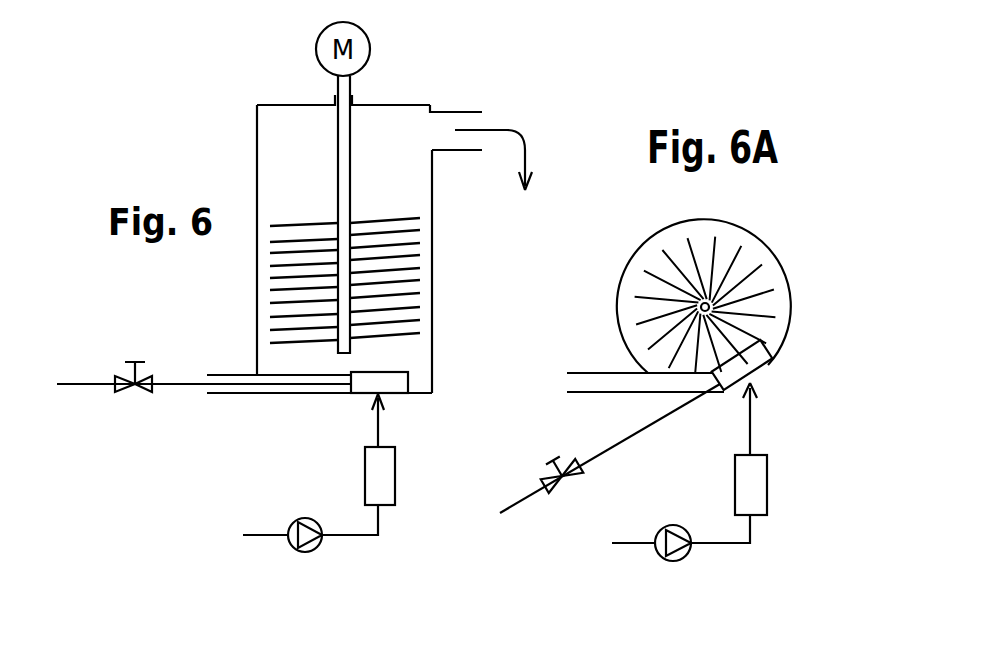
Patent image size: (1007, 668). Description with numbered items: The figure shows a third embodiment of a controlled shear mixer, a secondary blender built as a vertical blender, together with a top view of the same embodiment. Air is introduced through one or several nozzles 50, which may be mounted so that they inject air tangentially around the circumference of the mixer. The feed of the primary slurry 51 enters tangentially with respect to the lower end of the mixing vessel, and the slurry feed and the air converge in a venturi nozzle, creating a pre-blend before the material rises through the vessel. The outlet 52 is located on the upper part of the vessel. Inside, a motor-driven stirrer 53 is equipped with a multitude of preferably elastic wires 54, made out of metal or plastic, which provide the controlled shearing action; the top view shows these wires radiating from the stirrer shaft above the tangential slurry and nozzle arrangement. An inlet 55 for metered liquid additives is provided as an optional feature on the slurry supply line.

In FIG. 6, the nozzle 50 is at (397, 385).
In FIG. 6, the primary slurry feed 51 is at (240, 394).
In FIG. 6A, the primary slurry feed 51 is at (597, 373).
In FIG. 6, the outlet 52 is at (467, 112).
In FIG. 6, the stirrer 53 is at (338, 168).
In FIG. 6A, the stirrer 53 is at (712, 292).
In FIG. 6A, the elastic wires 54 is at (713, 309).
In FIG. 6, the inlet for metered liquid additives 55 is at (128, 395).